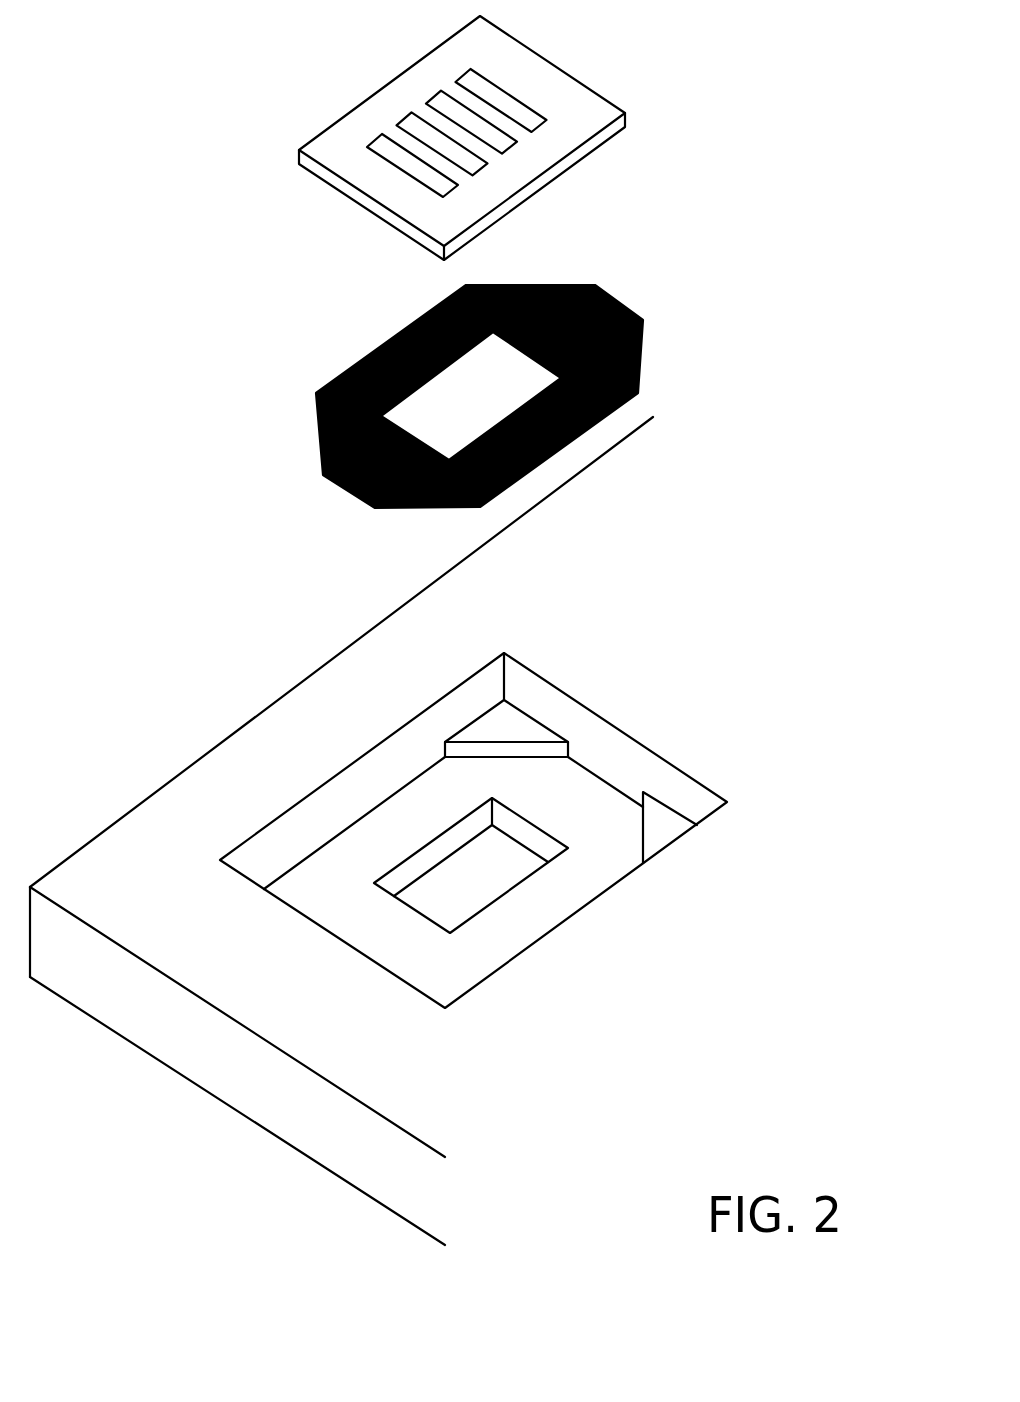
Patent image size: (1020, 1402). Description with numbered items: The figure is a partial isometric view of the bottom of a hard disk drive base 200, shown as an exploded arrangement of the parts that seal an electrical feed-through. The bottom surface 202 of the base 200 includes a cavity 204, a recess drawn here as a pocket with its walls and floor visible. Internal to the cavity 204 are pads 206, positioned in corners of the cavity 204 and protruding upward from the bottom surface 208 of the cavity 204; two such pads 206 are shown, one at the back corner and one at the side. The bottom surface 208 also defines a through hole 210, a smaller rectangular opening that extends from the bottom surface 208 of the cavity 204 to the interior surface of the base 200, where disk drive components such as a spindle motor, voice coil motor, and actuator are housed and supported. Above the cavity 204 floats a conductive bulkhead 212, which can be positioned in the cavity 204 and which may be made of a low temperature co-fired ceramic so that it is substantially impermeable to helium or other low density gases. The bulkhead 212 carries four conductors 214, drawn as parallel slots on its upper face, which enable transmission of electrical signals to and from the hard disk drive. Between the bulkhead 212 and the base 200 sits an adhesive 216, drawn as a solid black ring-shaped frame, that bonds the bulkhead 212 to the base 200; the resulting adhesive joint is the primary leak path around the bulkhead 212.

The base 200 is at (224, 662).
The bottom surface 202 is at (672, 530).
The cavity 204 is at (280, 826).
The pads 206 is at (669, 825).
The bottom surface of the cavity 208 is at (340, 898).
The through hole 210 is at (490, 880).
The conductive bulkhead 212 is at (570, 122).
The conductors 214 is at (418, 125).
The adhesive 216 is at (622, 303).